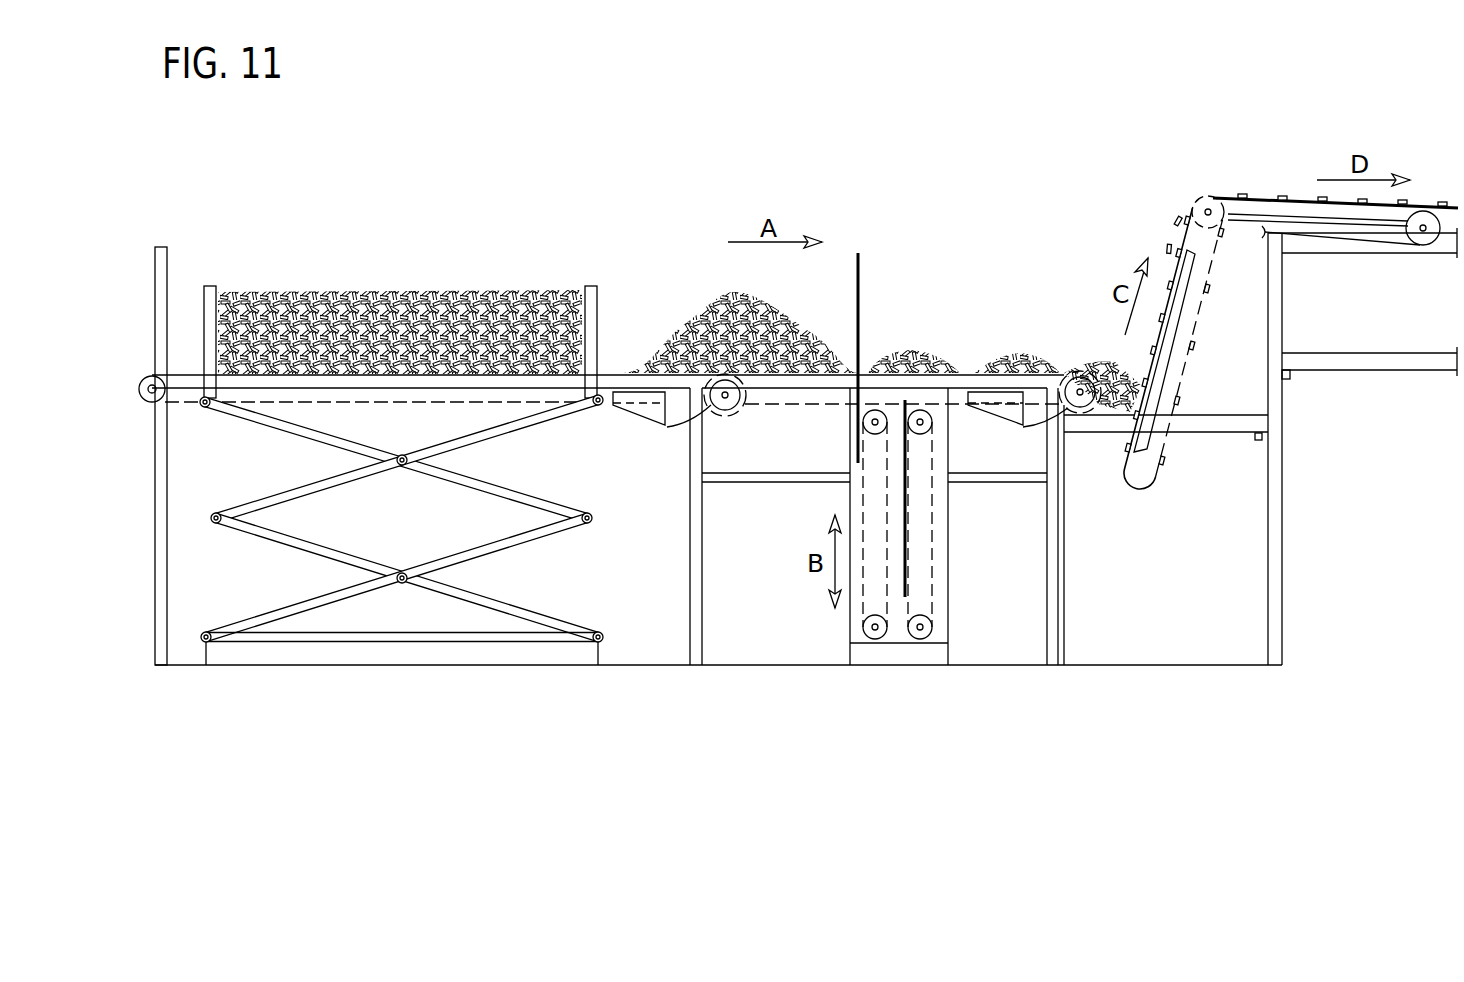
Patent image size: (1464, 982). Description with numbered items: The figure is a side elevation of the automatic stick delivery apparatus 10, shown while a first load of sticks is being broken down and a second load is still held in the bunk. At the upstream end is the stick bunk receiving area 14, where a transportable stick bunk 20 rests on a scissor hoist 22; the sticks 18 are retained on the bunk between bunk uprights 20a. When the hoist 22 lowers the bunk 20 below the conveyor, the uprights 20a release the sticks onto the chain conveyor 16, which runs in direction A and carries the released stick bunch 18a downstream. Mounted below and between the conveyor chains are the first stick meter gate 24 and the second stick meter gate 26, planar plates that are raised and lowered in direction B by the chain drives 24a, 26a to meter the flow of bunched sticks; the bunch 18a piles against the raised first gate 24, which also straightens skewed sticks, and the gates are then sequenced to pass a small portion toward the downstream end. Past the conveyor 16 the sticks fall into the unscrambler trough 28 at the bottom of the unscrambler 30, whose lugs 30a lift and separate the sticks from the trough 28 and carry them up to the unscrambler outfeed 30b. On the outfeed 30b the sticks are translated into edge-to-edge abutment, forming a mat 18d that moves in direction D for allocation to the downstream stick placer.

The apparatus 10 is at (928, 232).
The stick bunk receiving area 14 is at (378, 253).
The chain conveyor 16 is at (673, 442).
The sticks 18 is at (1178, 236).
The stick bunch 18a is at (708, 288).
The mat 18d is at (1420, 210).
The stick bunk 20 is at (240, 383).
The bunk uprights 20a is at (210, 286).
The scissor hoist 22 is at (515, 550).
The first stick meter gate 24 is at (862, 296).
The chain drive 24a is at (862, 520).
The second stick meter gate 26 is at (915, 403).
The chain drive 26a is at (935, 520).
The unscrambler trough 28 is at (1115, 398).
The unscrambler 30 is at (1194, 336).
The lugs 30a is at (1175, 255).
The unscrambler outfeed 30b is at (1262, 200).